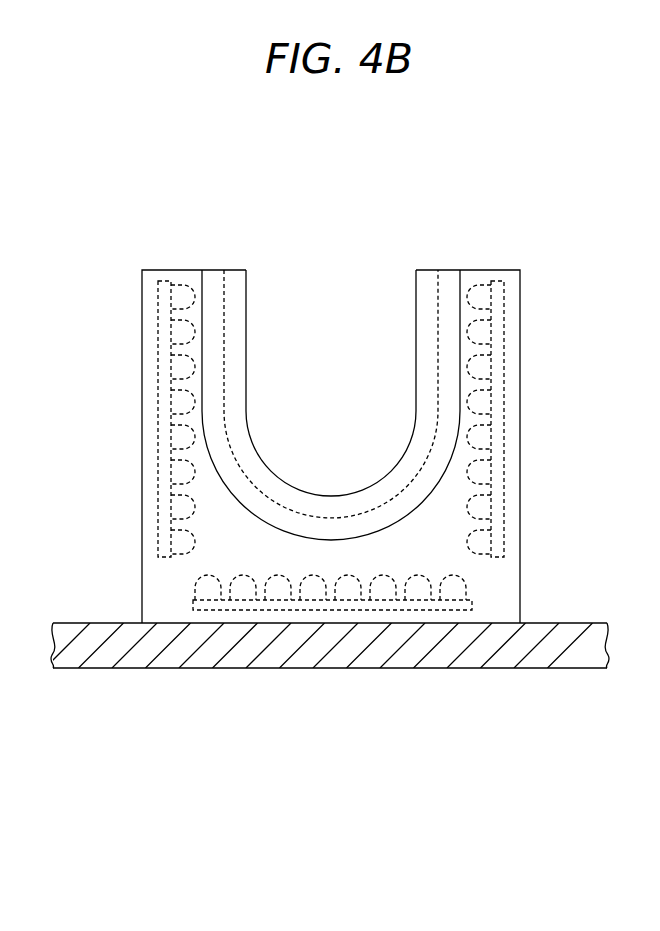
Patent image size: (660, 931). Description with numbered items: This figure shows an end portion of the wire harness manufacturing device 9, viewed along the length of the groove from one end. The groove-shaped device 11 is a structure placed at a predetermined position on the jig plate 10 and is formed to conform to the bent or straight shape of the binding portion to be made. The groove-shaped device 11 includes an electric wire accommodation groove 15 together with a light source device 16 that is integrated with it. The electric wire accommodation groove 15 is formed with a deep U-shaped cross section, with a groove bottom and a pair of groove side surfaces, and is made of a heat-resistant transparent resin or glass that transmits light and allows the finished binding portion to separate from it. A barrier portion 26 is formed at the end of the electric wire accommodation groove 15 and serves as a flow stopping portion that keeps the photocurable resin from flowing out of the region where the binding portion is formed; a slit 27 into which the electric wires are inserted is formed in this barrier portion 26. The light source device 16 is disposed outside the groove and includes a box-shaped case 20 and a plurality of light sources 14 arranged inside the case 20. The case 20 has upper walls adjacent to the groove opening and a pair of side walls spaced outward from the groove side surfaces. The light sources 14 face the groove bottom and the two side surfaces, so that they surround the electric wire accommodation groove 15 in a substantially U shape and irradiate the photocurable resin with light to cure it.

The wire harness manufacturing device 9 is at (182, 137).
The jig plate 10 is at (78, 622).
The groove-shaped device 11 is at (292, 247).
The light source 14 is at (158, 386).
The electric wire accommodation groove 15 is at (336, 355).
The light source device 16 is at (563, 712).
The case 20 is at (172, 270).
The barrier portion 26 is at (430, 282).
The slit 27 is at (247, 305).